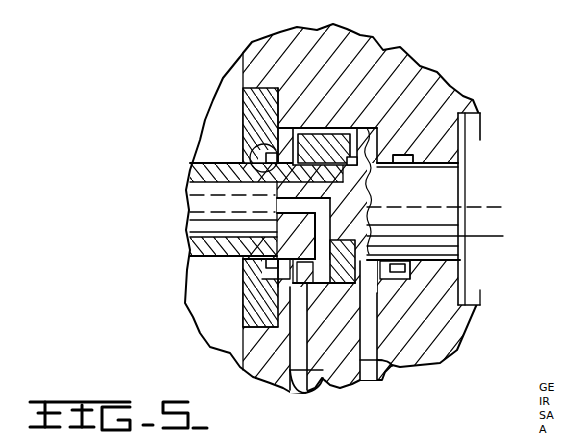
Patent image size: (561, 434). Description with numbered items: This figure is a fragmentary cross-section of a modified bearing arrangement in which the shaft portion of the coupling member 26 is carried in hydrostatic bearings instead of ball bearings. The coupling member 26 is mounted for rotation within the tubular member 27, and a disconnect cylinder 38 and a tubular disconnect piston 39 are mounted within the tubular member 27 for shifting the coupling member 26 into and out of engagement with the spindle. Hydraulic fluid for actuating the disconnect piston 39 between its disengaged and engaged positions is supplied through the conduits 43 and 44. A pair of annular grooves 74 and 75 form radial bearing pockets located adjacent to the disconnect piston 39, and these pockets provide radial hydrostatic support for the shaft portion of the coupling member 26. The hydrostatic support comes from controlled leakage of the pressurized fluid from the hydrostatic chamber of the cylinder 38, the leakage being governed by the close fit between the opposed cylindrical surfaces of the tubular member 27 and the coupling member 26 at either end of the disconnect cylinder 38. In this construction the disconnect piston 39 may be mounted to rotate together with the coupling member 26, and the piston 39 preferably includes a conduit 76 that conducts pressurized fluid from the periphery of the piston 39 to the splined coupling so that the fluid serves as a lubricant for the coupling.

The coupling member 26 is at (461, 203).
The tubular member 27 is at (381, 60).
The disconnect cylinder 38 is at (369, 166).
The disconnect piston 39 is at (378, 178).
The conduit 43 is at (317, 400).
The conduit 44 is at (395, 383).
The annular groove 74 is at (411, 162).
The annular groove 75 is at (258, 133).
The conduit 76 is at (322, 214).